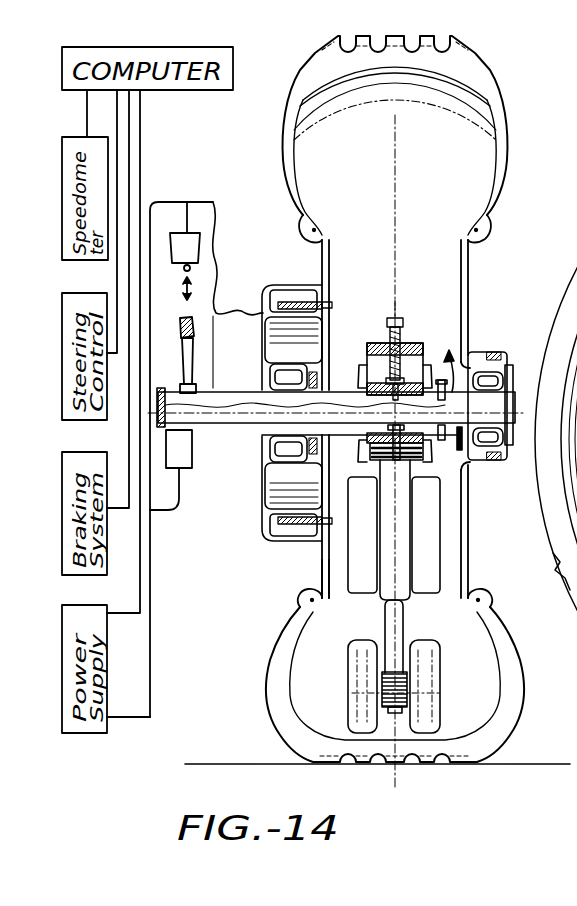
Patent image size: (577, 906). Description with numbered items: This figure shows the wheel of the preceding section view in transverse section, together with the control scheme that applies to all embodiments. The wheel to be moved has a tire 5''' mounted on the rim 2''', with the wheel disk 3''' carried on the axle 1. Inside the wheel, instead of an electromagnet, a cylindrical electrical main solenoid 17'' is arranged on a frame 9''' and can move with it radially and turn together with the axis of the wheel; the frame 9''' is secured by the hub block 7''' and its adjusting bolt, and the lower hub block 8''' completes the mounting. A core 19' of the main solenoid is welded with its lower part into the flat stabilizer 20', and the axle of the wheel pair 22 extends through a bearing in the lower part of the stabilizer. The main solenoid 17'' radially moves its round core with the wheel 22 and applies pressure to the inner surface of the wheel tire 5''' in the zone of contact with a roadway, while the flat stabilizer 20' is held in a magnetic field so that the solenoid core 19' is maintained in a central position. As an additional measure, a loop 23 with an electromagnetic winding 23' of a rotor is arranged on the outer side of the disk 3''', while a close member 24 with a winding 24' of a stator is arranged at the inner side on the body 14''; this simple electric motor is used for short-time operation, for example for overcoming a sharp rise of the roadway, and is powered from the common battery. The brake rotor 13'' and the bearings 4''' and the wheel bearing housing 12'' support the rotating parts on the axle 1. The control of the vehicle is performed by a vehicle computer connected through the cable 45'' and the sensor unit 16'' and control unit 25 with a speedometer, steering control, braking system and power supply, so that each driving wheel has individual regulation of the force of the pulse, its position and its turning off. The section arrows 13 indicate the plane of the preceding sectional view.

The wheel tire 5''' is at (380, 397).
The wheel rim 2''' is at (417, 411).
The axle shaft 1 is at (212, 436).
The sensor / shift lever unit 16'' is at (181, 459).
The cable 45'' is at (238, 295).
The control unit 25 is at (179, 449).
The electromagnetic winding of a rotor 23' is at (292, 303).
The loop 23 is at (295, 278).
The brake rotor 13'' is at (320, 407).
The bearing 4''' is at (359, 440).
The lower caliper carrier 14'' is at (257, 488).
The close member with stator winding 24 is at (262, 544).
The lower brake pad 24' is at (300, 546).
The disk 3''' is at (290, 581).
The hub block 7''' is at (410, 355).
The frame 9''' is at (412, 333).
The wheel bearing housing 12'' is at (493, 379).
The lower hub block 8''' is at (386, 449).
The core of the main solenoid 19' is at (395, 530).
The main solenoid 17'' is at (394, 535).
The flat stabilizer 20' is at (369, 656).
The wheel pair / axle of the wheel pair 22 is at (435, 678).
The section line 13- 13 is at (394, 453).